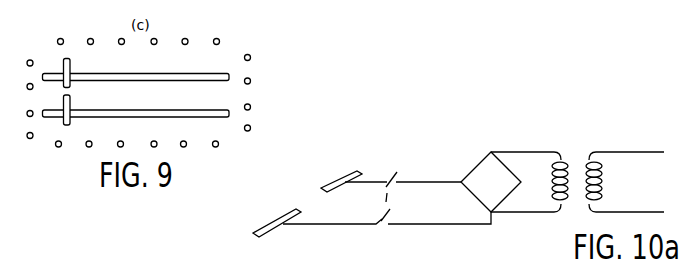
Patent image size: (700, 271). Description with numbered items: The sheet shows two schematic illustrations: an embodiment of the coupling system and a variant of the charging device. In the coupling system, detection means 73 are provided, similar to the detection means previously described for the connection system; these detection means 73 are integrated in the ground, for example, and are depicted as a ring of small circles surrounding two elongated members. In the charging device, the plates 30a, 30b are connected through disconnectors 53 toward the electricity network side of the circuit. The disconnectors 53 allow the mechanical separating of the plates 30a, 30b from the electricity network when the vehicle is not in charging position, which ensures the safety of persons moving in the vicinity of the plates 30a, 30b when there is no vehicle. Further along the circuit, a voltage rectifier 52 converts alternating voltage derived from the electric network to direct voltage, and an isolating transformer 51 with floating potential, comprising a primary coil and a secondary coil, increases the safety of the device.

In FIG. 9, the detection means 73 is at (220, 41).
In FIG. 10a, the plate 30a is at (342, 178).
In FIG. 10a, the plate 30b is at (273, 222).
In FIG. 10a, the disconnectors 53 is at (389, 173).
In FIG. 10a, the voltage rectifier 52 is at (483, 168).
In FIG. 10a, the isolating transformer 51 is at (568, 163).